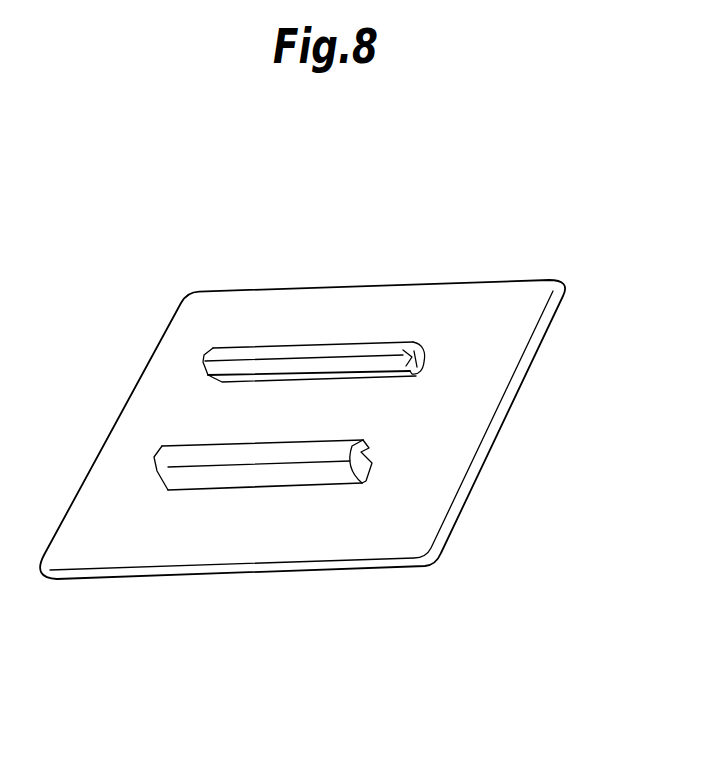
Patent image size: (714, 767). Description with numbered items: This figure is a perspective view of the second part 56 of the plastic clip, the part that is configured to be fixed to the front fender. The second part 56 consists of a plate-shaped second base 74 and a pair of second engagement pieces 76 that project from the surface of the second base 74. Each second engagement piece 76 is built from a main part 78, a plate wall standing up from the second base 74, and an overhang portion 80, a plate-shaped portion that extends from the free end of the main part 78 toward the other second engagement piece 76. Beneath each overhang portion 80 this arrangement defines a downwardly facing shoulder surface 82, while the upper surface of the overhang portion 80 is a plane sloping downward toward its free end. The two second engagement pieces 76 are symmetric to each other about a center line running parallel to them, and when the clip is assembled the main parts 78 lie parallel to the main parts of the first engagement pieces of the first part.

The second part 56 is at (514, 246).
The second base 74 is at (523, 315).
The second engagement pieces 76 is at (378, 462).
The main part 78 is at (420, 343).
The overhang portion 80 is at (292, 355).
The shoulder surface 82 is at (415, 375).